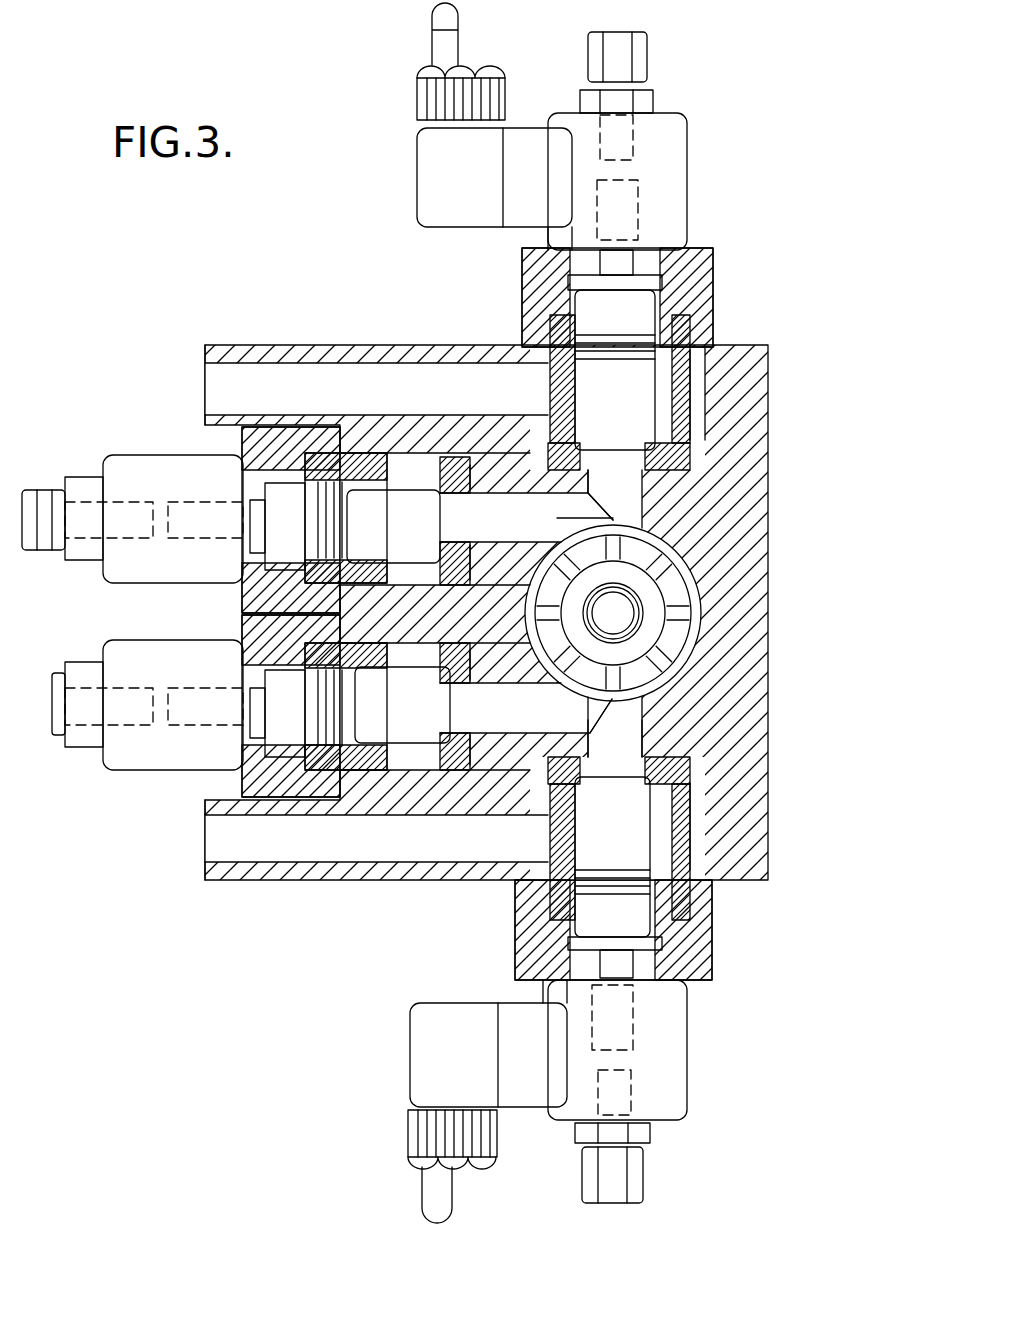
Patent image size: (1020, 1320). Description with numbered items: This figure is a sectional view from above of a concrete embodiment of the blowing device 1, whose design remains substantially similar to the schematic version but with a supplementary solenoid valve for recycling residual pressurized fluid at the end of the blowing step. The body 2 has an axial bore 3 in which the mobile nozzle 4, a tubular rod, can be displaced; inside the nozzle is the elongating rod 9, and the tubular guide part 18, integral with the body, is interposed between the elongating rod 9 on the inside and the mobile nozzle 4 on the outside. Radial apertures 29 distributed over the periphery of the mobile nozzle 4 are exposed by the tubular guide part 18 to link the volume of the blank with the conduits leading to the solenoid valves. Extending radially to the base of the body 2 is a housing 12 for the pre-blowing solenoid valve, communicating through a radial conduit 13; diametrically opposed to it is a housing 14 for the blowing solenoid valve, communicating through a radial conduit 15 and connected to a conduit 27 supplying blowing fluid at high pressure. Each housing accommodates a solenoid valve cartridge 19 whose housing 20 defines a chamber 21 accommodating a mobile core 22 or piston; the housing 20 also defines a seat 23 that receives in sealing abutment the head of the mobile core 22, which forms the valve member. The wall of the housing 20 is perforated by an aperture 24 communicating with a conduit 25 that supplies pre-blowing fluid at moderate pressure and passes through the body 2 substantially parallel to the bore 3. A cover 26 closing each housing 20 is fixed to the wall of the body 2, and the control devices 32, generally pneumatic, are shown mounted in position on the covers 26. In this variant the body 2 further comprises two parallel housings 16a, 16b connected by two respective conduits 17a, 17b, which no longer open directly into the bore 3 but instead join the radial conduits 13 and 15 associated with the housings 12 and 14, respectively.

The blowing device 1 is at (392, 271).
The body 2 is at (740, 546).
The axial bore 3 is at (640, 653).
The mobile nozzle 4 is at (612, 706).
The elongating rod 9 is at (632, 620).
The housing 12 is at (690, 792).
The radial conduit 13 is at (640, 745).
The housing 14 is at (695, 390).
The radial conduit 15 is at (640, 480).
The housing 16a is at (452, 643).
The housing 16b is at (450, 584).
The conduit 17a is at (500, 720).
The conduit 17b is at (560, 510).
The tubular guide part 18 is at (645, 678).
The solenoid valve cartridge 19 is at (455, 470).
The housing 20 is at (370, 460).
The chamber 21 is at (310, 455).
The mobile core 22 is at (375, 525).
The seat 23 is at (420, 470).
The aperture 24 is at (695, 833).
The conduit 25 is at (230, 832).
The cover 26 is at (685, 277).
The conduit 27 is at (235, 392).
The radial apertures 29 is at (615, 555).
The control devices 32 is at (655, 159).